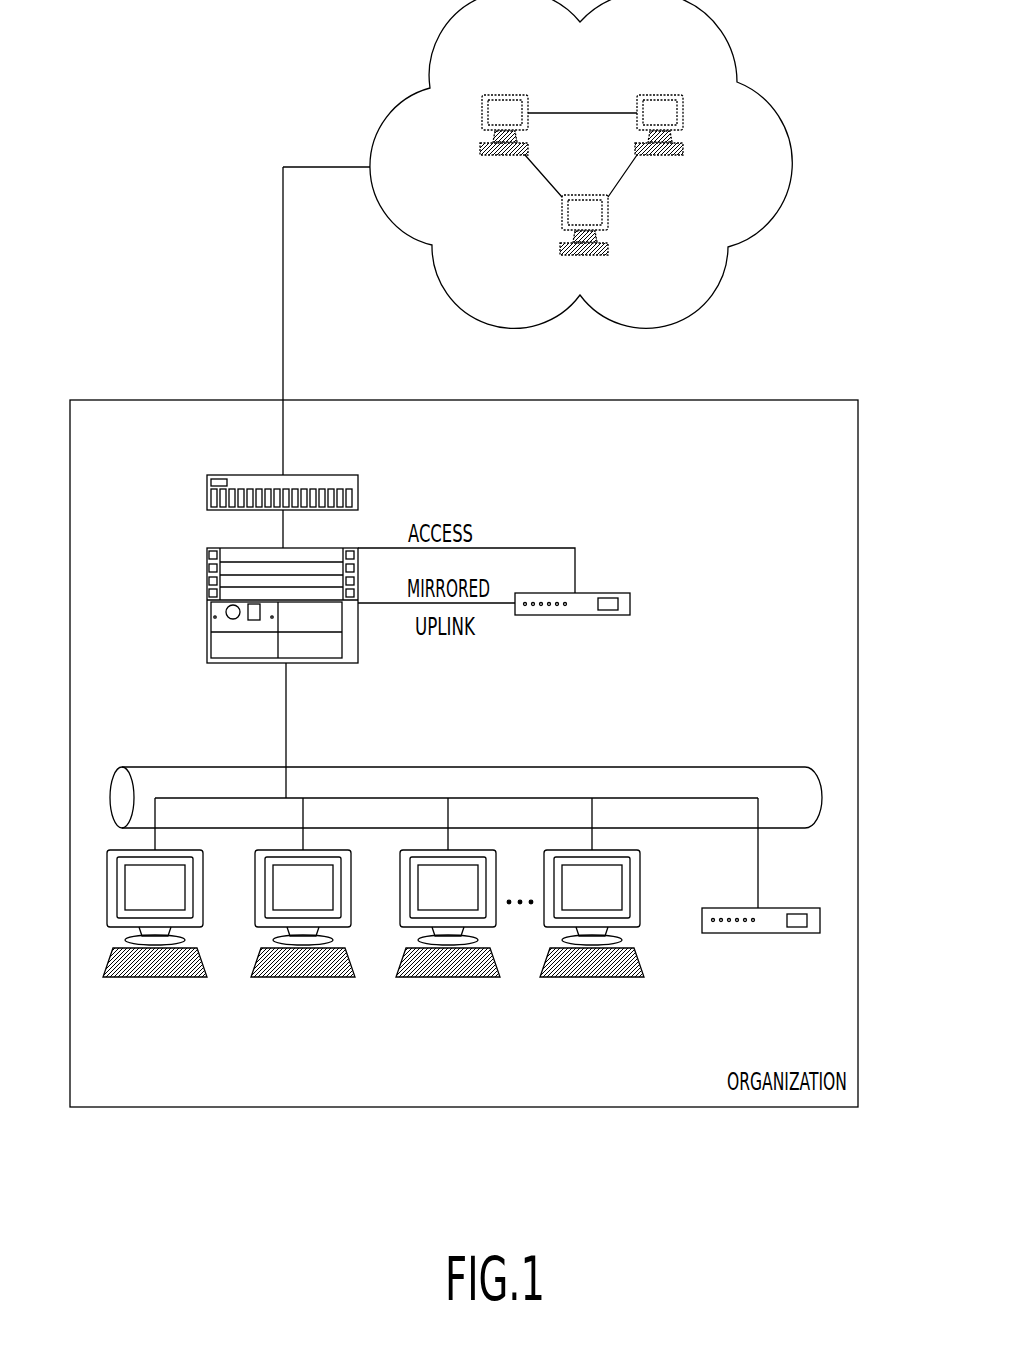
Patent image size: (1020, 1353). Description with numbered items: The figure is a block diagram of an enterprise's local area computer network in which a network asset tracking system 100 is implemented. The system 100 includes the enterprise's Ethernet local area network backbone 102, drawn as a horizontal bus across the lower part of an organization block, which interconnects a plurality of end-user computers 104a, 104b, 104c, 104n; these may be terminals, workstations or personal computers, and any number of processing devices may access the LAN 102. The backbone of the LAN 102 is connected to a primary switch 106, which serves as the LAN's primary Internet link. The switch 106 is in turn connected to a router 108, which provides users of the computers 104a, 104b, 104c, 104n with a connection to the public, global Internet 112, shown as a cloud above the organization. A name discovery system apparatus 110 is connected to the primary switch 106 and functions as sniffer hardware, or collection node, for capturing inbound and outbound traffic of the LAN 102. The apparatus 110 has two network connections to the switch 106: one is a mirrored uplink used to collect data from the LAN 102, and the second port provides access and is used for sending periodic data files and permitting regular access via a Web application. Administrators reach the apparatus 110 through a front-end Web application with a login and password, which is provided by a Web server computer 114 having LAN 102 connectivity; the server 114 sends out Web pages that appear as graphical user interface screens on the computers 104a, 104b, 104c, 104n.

The network asset tracking system 100 is at (125, 170).
The local area network backbone 102 is at (448, 755).
The end-user computer 104a is at (150, 978).
The end-user computer 104b is at (300, 978).
The end-user computer 104c is at (445, 978).
The end-user computer 104n is at (588, 978).
The primary switch 106 is at (207, 665).
The router 108 is at (362, 478).
The name discovery system apparatus 110 is at (586, 577).
The Internet 112 is at (806, 130).
The Web server computer 114 is at (719, 933).